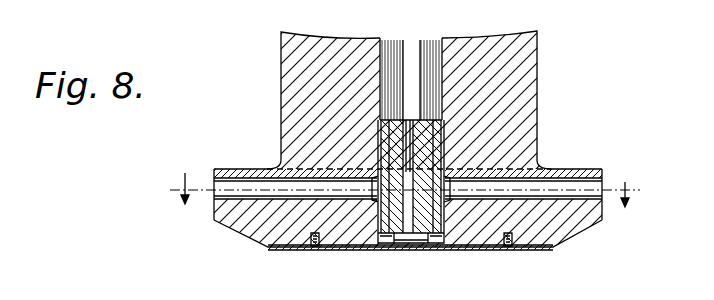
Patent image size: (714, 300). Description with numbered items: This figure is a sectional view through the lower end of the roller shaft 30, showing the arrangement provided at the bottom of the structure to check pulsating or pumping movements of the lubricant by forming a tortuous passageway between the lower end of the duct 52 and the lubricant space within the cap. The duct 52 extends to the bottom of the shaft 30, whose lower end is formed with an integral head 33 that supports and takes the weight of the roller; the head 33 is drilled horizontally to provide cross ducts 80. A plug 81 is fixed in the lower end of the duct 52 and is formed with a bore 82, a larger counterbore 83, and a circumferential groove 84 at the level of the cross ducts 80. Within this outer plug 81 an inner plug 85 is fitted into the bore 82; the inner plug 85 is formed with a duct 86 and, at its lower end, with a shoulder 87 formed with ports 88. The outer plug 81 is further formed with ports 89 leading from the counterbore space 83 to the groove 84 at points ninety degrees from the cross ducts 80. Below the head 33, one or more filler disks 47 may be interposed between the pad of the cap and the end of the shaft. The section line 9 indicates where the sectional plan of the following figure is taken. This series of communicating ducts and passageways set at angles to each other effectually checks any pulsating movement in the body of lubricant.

The shaft 30 is at (303, 60).
The duct 52 is at (444, 42).
The plug 85 is at (400, 120).
The duct 86 is at (410, 133).
The cross ducts 80 is at (540, 187).
The head 33 is at (572, 217).
The section line 9- 9 is at (404, 190).
The plug 81 is at (445, 135).
The bore 82 is at (380, 140).
The ports 89 is at (420, 178).
The ports 88 is at (430, 233).
The shoulder 87 is at (433, 243).
The filler disks 47 is at (493, 250).
The circumferential groove 84 is at (316, 246).
The counterbore 83 is at (373, 198).